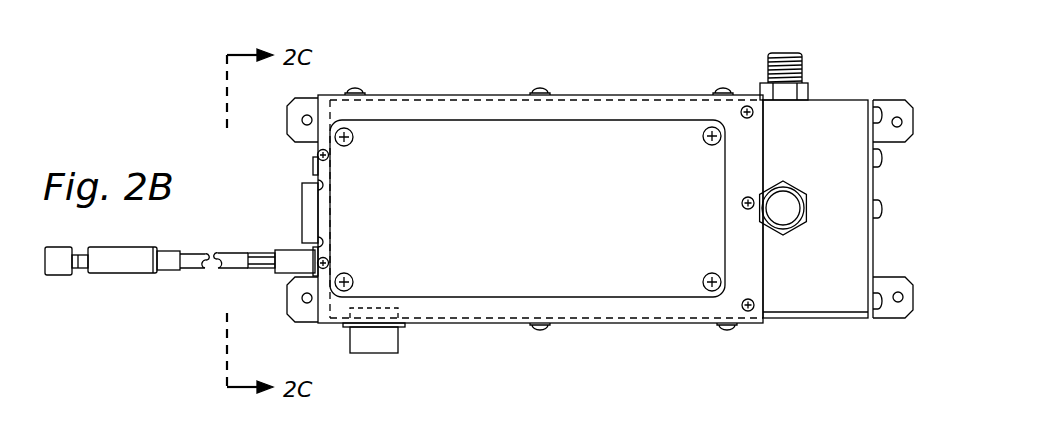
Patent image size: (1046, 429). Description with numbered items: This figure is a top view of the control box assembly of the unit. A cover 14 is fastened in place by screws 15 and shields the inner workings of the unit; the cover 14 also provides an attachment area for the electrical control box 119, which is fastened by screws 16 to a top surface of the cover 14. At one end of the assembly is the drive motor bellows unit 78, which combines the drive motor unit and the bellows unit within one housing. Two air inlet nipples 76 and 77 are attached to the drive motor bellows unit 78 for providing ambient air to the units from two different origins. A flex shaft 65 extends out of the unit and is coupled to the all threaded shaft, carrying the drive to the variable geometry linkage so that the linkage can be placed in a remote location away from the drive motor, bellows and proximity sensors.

The cover 14 is at (480, 325).
The screws 15 is at (752, 313).
The screws 16 is at (352, 131).
The electrical control box 119 is at (438, 120).
The flex shaft 65 is at (128, 275).
The air inlet nipple 76 is at (783, 53).
The air inlet nipple 77 is at (805, 226).
The drive motor bellows unit 78 is at (838, 318).